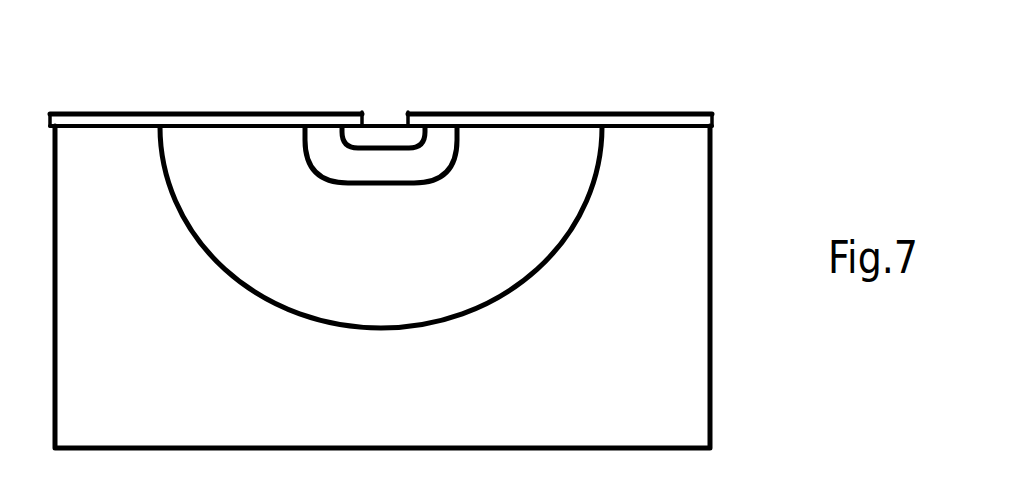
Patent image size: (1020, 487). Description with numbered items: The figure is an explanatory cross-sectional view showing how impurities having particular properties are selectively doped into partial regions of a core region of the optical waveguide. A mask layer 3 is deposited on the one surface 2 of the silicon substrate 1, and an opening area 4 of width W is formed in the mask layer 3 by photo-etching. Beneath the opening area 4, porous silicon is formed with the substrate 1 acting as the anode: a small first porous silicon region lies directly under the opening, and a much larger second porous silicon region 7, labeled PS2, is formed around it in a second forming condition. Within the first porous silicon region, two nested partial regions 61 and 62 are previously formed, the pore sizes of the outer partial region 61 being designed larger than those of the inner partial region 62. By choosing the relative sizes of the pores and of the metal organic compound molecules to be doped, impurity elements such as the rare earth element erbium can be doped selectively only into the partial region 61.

The silicon substrate 1 is at (677, 335).
The one surface 2 is at (715, 120).
The mask layer 3 is at (630, 117).
The opening area 4 is at (378, 113).
The second porous silicon region 7 is at (233, 153).
The partial region 61 is at (392, 137).
The partial region 62 is at (440, 142).